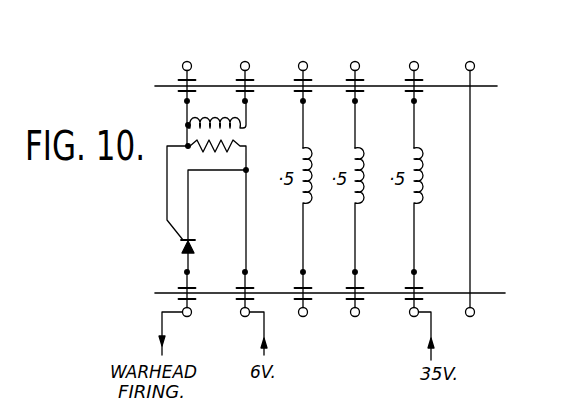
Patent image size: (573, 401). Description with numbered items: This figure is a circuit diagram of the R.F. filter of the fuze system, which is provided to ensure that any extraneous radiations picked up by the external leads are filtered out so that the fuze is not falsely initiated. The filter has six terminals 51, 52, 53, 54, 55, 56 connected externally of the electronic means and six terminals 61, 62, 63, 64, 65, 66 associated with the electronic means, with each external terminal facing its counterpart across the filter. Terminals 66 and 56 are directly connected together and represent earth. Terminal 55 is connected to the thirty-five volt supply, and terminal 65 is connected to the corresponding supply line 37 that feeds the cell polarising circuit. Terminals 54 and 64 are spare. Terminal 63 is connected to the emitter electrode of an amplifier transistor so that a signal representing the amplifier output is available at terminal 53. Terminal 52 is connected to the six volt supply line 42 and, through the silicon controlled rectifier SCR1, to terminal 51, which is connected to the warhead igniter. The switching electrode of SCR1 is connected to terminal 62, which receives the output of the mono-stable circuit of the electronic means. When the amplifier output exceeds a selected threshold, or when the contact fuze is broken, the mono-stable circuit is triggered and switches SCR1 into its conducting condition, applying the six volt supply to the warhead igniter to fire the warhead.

The supply line 37 is at (418, 66).
The 6 volt supply line 42 is at (264, 350).
The terminal 51 is at (178, 312).
The terminal 52 is at (250, 312).
The terminal 53 is at (304, 306).
The terminal 54 is at (357, 306).
The terminal 55 is at (418, 315).
The terminal 56 is at (472, 325).
The terminal 61 is at (187, 91).
The terminal 62 is at (246, 69).
The terminal 63 is at (301, 92).
The terminal 64 is at (354, 92).
The terminal 65 is at (412, 92).
The terminal 66 is at (472, 172).
The silicon controlled rectifier SCR1 is at (181, 250).